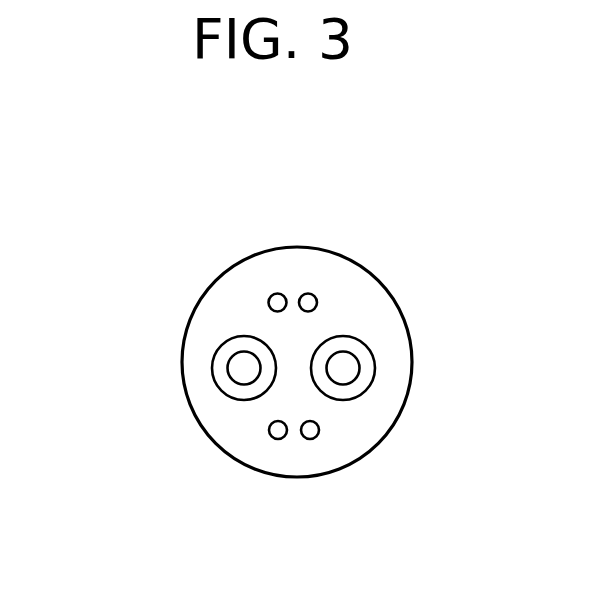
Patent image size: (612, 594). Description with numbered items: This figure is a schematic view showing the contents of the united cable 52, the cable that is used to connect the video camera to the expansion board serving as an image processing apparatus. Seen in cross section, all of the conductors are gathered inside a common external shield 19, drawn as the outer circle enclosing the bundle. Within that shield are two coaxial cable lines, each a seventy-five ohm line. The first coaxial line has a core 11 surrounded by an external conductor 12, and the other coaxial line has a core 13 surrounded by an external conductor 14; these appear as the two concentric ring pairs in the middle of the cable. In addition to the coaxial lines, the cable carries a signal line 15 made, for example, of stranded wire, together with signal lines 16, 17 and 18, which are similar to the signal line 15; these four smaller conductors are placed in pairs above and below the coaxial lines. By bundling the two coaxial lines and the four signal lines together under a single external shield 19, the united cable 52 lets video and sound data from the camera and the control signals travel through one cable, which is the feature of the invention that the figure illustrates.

The united cable 52 is at (233, 250).
The external shield 19 is at (367, 268).
The core 11 is at (228, 368).
The external conductor 12 is at (224, 394).
The core 13 is at (357, 357).
The external conductor 14 is at (372, 381).
The signal line 15 is at (268, 297).
The signal line 16 is at (306, 293).
The signal line 17 is at (275, 440).
The signal line 18 is at (312, 440).